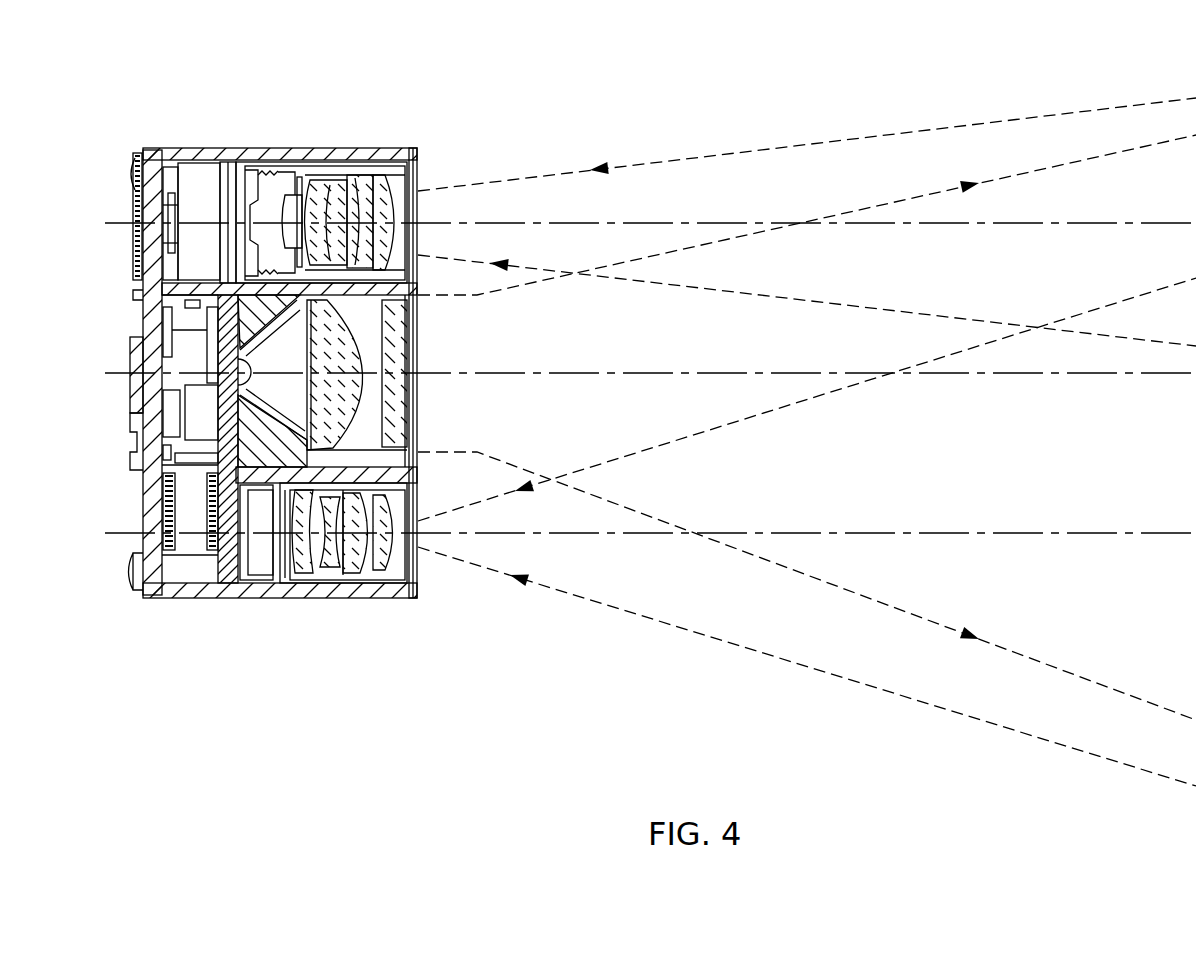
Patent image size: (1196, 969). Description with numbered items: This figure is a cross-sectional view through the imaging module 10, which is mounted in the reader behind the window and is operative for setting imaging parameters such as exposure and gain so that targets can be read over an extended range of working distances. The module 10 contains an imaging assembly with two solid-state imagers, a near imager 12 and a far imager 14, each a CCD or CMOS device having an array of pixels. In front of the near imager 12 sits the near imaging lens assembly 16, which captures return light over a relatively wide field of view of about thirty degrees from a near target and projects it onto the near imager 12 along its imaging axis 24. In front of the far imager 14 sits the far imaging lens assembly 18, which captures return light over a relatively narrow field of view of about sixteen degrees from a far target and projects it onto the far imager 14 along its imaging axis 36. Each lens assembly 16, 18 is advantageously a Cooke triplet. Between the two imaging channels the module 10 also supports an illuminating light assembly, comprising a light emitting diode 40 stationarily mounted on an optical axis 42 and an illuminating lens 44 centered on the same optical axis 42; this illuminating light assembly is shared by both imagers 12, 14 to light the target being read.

The imaging module 10 is at (157, 110).
The near imager 12 is at (222, 580).
The far imager 14 is at (172, 177).
The near imaging lens assembly 16 is at (300, 575).
The far imaging lens assembly 18 is at (317, 183).
The imaging axis 24 is at (738, 532).
The imaging axis 36 is at (654, 222).
The light emitting diode 40 is at (243, 372).
The optical axis 42 is at (654, 372).
The illuminating lens 44 is at (363, 380).